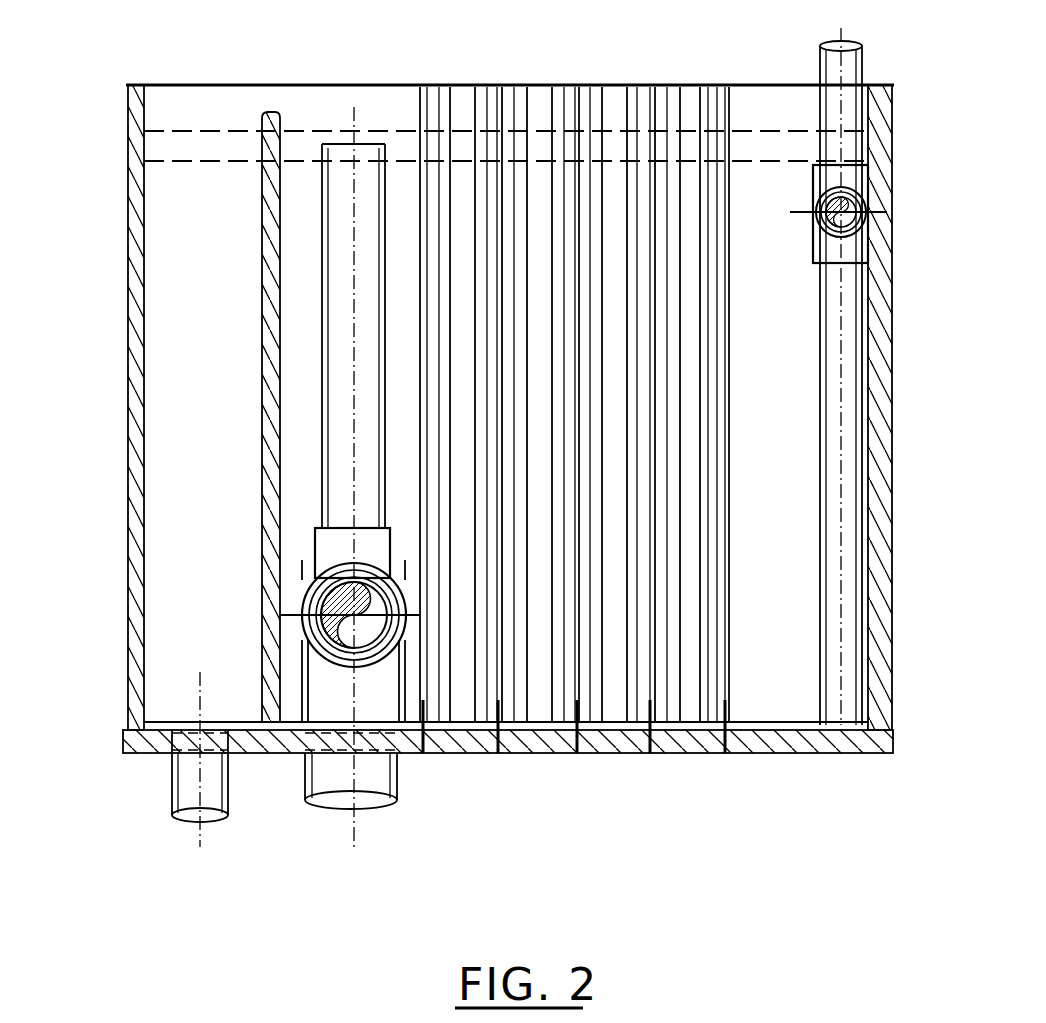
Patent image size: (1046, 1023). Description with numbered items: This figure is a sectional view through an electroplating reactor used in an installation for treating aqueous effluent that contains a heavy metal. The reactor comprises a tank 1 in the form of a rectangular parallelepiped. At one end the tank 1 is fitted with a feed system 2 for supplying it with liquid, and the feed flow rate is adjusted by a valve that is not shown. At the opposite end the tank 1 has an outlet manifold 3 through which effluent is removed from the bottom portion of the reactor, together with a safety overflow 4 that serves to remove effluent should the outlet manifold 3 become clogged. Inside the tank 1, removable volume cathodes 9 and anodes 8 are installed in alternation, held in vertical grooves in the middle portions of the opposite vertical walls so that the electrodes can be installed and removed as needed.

The tank 1 is at (116, 390).
The feed system 2 is at (848, 72).
The outlet manifold 3 is at (340, 775).
The safety overflow 4 is at (185, 778).
The anodes 8 is at (498, 753).
The volume cathodes 9 is at (538, 98).